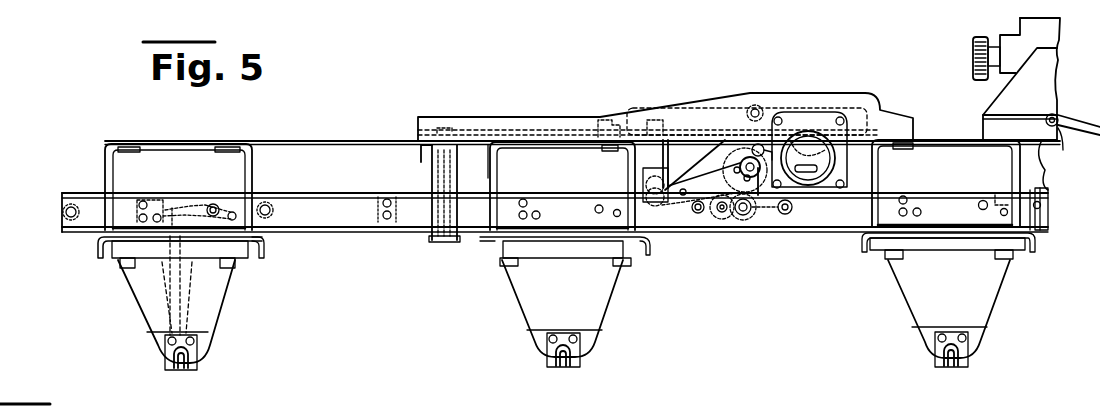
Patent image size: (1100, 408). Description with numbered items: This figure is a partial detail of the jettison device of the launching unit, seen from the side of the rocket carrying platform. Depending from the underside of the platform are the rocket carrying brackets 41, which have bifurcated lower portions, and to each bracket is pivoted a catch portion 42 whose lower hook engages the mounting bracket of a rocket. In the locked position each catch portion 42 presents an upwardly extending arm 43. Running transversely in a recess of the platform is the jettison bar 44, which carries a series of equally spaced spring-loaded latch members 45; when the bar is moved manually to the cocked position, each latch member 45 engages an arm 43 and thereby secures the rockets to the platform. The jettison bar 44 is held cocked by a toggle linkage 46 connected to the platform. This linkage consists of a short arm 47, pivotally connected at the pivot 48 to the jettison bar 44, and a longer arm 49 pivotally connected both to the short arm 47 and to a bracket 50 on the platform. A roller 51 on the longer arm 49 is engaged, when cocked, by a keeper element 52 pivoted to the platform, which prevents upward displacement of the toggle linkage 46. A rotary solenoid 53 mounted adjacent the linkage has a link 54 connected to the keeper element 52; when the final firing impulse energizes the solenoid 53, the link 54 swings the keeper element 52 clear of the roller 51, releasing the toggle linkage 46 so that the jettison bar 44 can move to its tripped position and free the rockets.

The rocket carrying bracket 41 is at (614, 303).
The catch portion 42 is at (177, 368).
The upwardly extending arm 43 is at (178, 292).
The jettison bar 44 is at (350, 222).
The spring-loaded latch member 45 is at (176, 203).
The toggle linkage 46 is at (763, 208).
The short arm 47 is at (733, 218).
The pivot connection 48 is at (722, 214).
The longer arm 49 is at (705, 182).
The bracket 50 is at (650, 163).
The roller 51 is at (751, 169).
The keeper element 52 is at (742, 107).
The rotary solenoid 53 is at (846, 168).
The link 54 is at (793, 208).